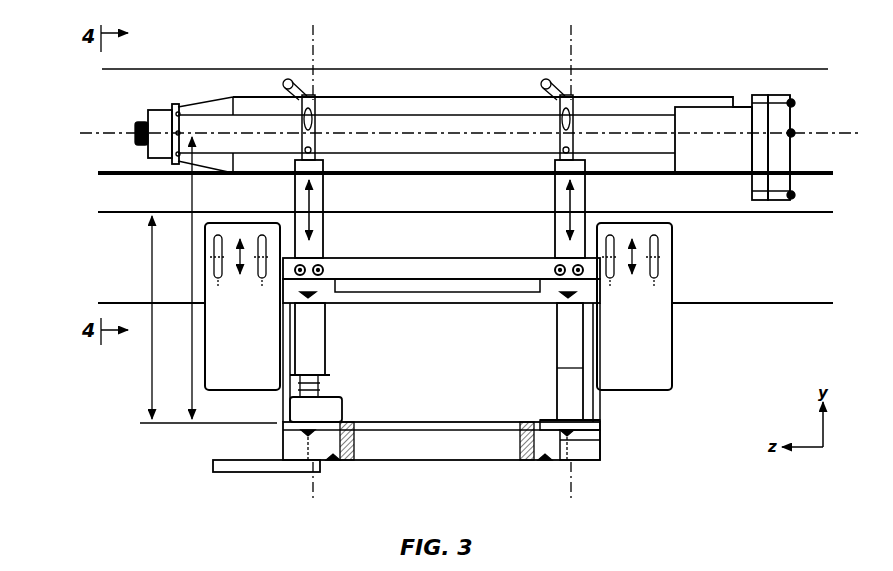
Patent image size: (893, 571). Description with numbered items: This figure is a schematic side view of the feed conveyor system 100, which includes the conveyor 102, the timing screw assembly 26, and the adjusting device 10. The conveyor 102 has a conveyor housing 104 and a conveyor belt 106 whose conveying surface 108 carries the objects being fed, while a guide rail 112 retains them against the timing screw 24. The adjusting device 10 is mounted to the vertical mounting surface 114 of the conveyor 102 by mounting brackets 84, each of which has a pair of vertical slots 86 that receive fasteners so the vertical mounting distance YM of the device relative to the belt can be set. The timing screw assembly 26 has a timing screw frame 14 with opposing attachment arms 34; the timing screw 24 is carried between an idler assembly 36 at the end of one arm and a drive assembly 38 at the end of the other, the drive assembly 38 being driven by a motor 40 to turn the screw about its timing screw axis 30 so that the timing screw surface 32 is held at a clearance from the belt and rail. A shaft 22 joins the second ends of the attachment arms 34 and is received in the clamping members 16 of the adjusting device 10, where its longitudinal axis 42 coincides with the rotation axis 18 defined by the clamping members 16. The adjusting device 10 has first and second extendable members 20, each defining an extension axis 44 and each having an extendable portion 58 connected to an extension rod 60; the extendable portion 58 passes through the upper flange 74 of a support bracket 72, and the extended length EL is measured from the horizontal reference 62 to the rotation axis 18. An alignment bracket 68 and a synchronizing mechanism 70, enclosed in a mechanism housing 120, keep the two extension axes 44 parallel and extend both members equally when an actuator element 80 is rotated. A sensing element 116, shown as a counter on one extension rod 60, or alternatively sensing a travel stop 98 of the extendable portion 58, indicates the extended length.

The adjusting device 10 is at (696, 378).
The timing screw frame 14 is at (495, 212).
The clamping member 16 is at (316, 92).
The rotation axis 18 is at (443, 108).
The timing screw axis 30 is at (443, 108).
The longitudinal axis of the rotatable member 42 is at (100, 129).
The extendable member 20 is at (330, 338).
The shaft 22 is at (385, 100).
The timing screw 24 is at (465, 104).
The timing screw assembly 26 is at (829, 118).
The timing screw surface 32 is at (465, 104).
The attachment arm 34 is at (175, 103).
The idler assembly 36 is at (148, 118).
The drive assembly 38 is at (780, 95).
The motor 40 is at (693, 162).
The extension axis 44 is at (318, 490).
The extendable portion 58 is at (325, 240).
The extension rod 60 is at (322, 378).
The horizontal reference 62 is at (176, 424).
The alignment bracket 68 is at (386, 254).
The synchronizing mechanism 70 is at (462, 418).
The support bracket 72 is at (598, 423).
The upper flange 74 is at (540, 303).
The actuator element 80 is at (245, 472).
The mounting bracket 84 is at (672, 378).
The vertical slot 86 is at (222, 278).
The travel stop 98 is at (557, 370).
The feed conveyor system 100 is at (677, 52).
The conveyor 102 is at (76, 192).
The conveyor housing 104 is at (483, 326).
The conveyor belt 106 is at (836, 177).
The conveying surface 108 is at (812, 176).
The guide rail 112 is at (190, 69).
The mounting surface 114 is at (744, 300).
The sensing element 116 is at (340, 398).
The mechanism housing 120 is at (598, 448).